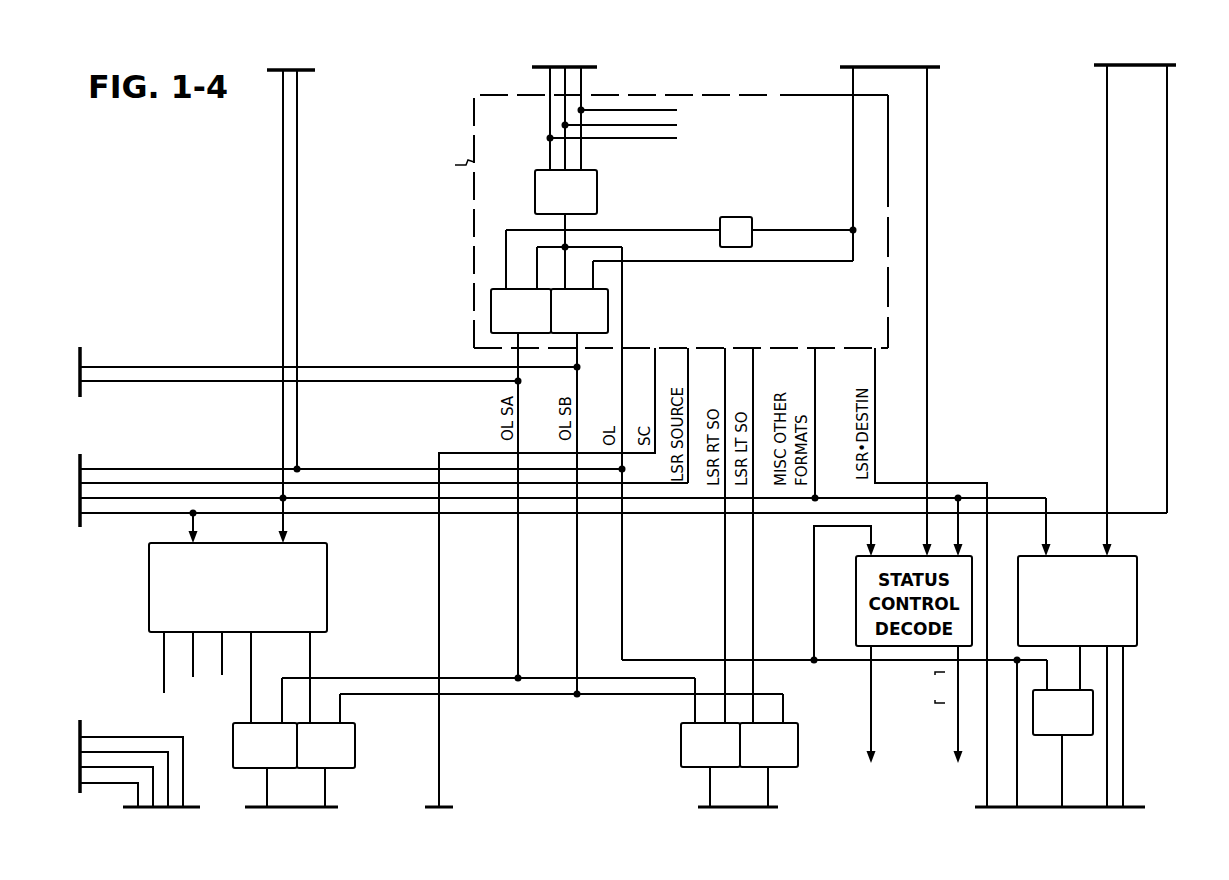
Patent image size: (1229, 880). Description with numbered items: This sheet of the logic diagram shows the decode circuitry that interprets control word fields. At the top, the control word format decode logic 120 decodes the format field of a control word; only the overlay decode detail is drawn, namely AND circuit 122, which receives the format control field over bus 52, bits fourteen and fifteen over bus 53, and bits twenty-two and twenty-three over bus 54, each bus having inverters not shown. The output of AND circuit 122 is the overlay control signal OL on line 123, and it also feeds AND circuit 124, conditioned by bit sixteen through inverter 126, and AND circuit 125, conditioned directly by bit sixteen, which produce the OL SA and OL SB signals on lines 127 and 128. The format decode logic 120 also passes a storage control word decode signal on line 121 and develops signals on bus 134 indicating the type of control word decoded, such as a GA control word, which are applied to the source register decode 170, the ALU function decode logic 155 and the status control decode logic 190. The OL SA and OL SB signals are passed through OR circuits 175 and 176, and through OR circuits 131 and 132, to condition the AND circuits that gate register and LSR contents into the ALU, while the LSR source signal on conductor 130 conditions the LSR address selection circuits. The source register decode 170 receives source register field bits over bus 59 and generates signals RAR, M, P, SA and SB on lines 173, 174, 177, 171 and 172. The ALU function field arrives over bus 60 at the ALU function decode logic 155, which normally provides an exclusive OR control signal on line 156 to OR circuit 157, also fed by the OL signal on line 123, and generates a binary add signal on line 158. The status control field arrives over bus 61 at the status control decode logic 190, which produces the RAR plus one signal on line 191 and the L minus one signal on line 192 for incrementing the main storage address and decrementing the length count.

The bus 52 is at (585, 118).
The bus 53 is at (587, 118).
The bus 54 is at (612, 118).
The bus 59 is at (1191, 289).
The bus 60 is at (1086, 310).
The bus 61 is at (954, 311).
The control word format decode logic 120 is at (638, 221).
The line 121 is at (540, 577).
The AND circuit 122 is at (590, 210).
The line 123 is at (671, 380).
The AND circuit 124 is at (544, 328).
The AND circuit 125 is at (602, 328).
The inverter 126 is at (786, 211).
The line 127 is at (387, 528).
The line 128 is at (431, 516).
The conductor 130 is at (384, 415).
The OR circuit 131 is at (737, 761).
The OR circuit 132 is at (796, 761).
The bus 134 is at (565, 313).
The ALU function decode logic 155 is at (1104, 601).
The line 156 is at (1135, 668).
The OR circuit 157 is at (1089, 726).
The line 158 is at (1150, 726).
The source register decode 170 is at (266, 587).
The SA signal line 171 is at (251, 692).
The SB signal line 172 is at (334, 677).
The RAR signal line 173 is at (129, 666).
The line 174 is at (193, 672).
The OR circuit 175 is at (291, 761).
The OR circuit 176 is at (350, 761).
The line 177 is at (222, 664).
The status control decode logic 190 is at (856, 590).
The line 191 is at (889, 704).
The line 192 is at (930, 704).